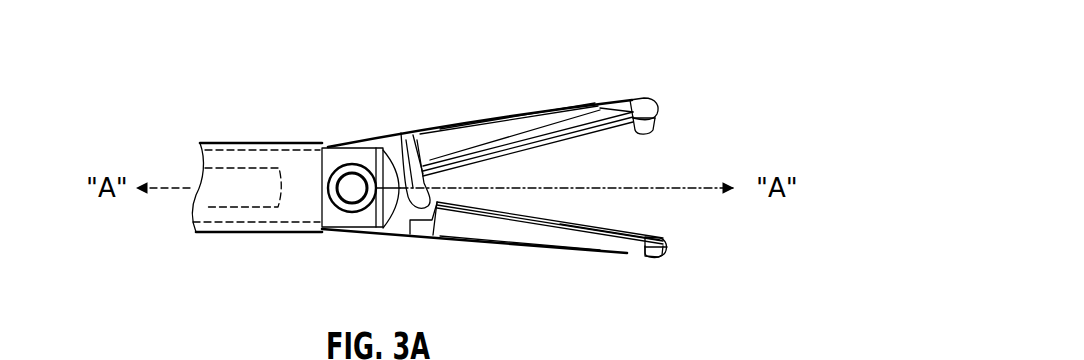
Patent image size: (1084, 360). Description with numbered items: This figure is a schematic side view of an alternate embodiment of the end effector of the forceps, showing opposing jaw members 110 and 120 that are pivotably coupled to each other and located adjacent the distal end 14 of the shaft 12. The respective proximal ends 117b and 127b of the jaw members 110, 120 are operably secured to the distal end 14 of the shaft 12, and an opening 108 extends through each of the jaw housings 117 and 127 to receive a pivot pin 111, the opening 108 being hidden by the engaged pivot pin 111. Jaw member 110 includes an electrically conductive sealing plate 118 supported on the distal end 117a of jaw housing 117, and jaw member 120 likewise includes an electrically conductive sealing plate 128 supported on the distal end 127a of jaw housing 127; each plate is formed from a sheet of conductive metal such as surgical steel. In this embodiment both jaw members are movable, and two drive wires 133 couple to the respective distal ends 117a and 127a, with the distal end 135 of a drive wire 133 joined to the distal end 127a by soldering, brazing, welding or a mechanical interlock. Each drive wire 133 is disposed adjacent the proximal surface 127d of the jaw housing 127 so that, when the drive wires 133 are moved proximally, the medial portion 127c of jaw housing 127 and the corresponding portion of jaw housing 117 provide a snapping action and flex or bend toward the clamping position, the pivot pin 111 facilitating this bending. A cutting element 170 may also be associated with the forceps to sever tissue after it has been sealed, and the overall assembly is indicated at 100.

The shaft 12 is at (252, 234).
The distal end of shaft 14 is at (313, 143).
The forceps 100 is at (652, 30).
The opening 108 is at (343, 212).
The jaw member 110 is at (644, 260).
The pivot pin 111 is at (352, 192).
The jaw housing 117 is at (596, 266).
The distal end of jaw housing 117a is at (670, 250).
The proximal end of jaw member 117b is at (392, 229).
The electrically conductive sealing plate 118 is at (632, 232).
The jaw member 120 is at (658, 104).
The jaw housing 127 is at (598, 84).
The distal end of jaw housing 127a is at (658, 98).
The proximal end of jaw member 127b is at (388, 128).
The medial portion 127c is at (453, 142).
The proximal surface of jaw housing 127d is at (493, 113).
The electrically conductive sealing plate 128 is at (655, 124).
The drive wire 133 is at (222, 148).
The distal end of drive wire 135 is at (622, 100).
The cutting element 170 is at (196, 226).